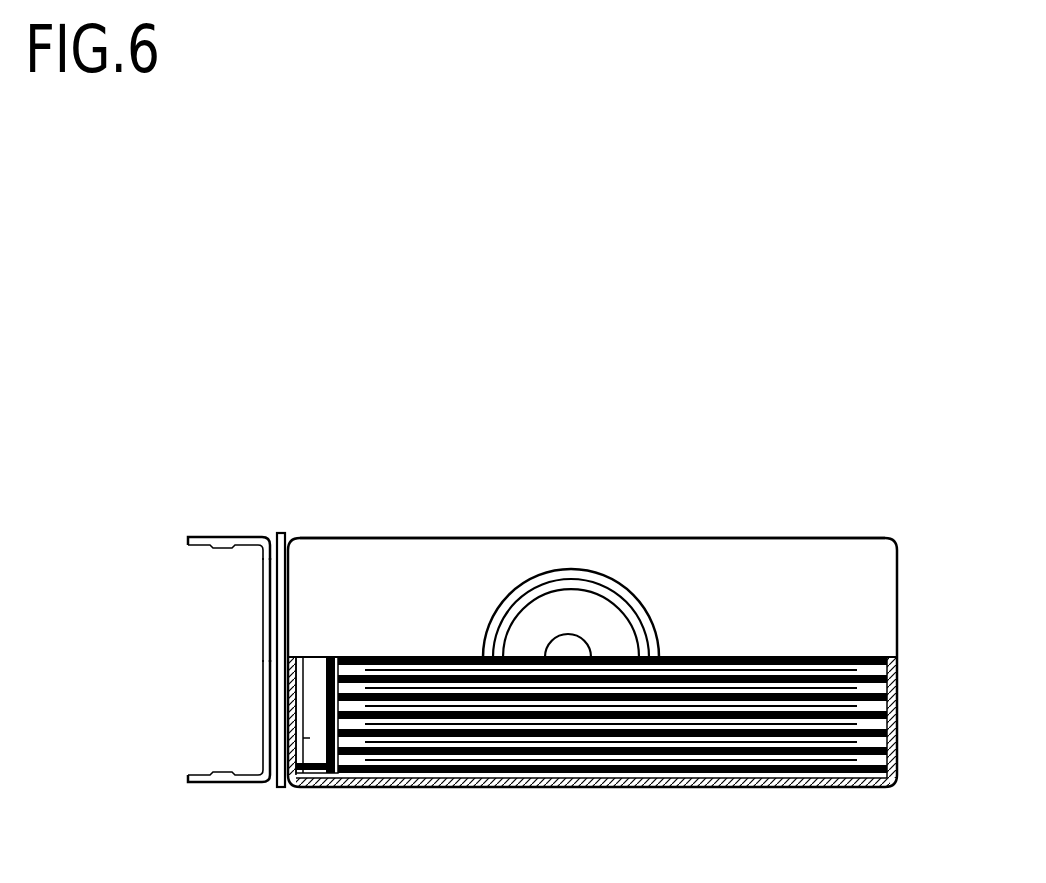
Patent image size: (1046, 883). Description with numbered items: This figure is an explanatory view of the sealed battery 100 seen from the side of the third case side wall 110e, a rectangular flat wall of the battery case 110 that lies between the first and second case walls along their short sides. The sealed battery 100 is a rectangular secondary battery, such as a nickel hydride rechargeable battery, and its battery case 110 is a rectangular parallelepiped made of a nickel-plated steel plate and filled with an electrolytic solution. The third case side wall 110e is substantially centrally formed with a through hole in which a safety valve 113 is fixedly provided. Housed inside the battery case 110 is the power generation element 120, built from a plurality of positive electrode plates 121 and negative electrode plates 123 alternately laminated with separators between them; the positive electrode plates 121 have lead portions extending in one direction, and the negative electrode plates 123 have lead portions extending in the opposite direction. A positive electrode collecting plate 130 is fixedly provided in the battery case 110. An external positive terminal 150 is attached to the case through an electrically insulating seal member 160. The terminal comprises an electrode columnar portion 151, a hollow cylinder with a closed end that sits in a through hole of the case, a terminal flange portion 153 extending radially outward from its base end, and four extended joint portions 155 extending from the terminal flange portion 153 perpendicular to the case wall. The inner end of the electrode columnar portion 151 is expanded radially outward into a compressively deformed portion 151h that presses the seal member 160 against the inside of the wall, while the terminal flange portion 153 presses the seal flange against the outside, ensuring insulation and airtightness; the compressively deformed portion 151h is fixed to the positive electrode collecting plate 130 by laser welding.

The sealed battery 100 is at (762, 386).
The battery case 110 is at (725, 555).
The third case side wall 110e is at (458, 555).
The safety valve 113 is at (587, 613).
The power generation element 120 is at (636, 770).
The positive electrode plate 121 is at (357, 788).
The negative electrode plate 123 is at (880, 782).
The positive electrode collecting plate 130 is at (320, 785).
The external positive terminal 150 is at (82, 565).
The electrode columnar portion 151 is at (263, 662).
The compressively deformed portion 151h is at (307, 740).
The terminal flange portion 153 is at (263, 588).
The extended joint portion 155 is at (193, 546).
The seal member 160 is at (284, 530).